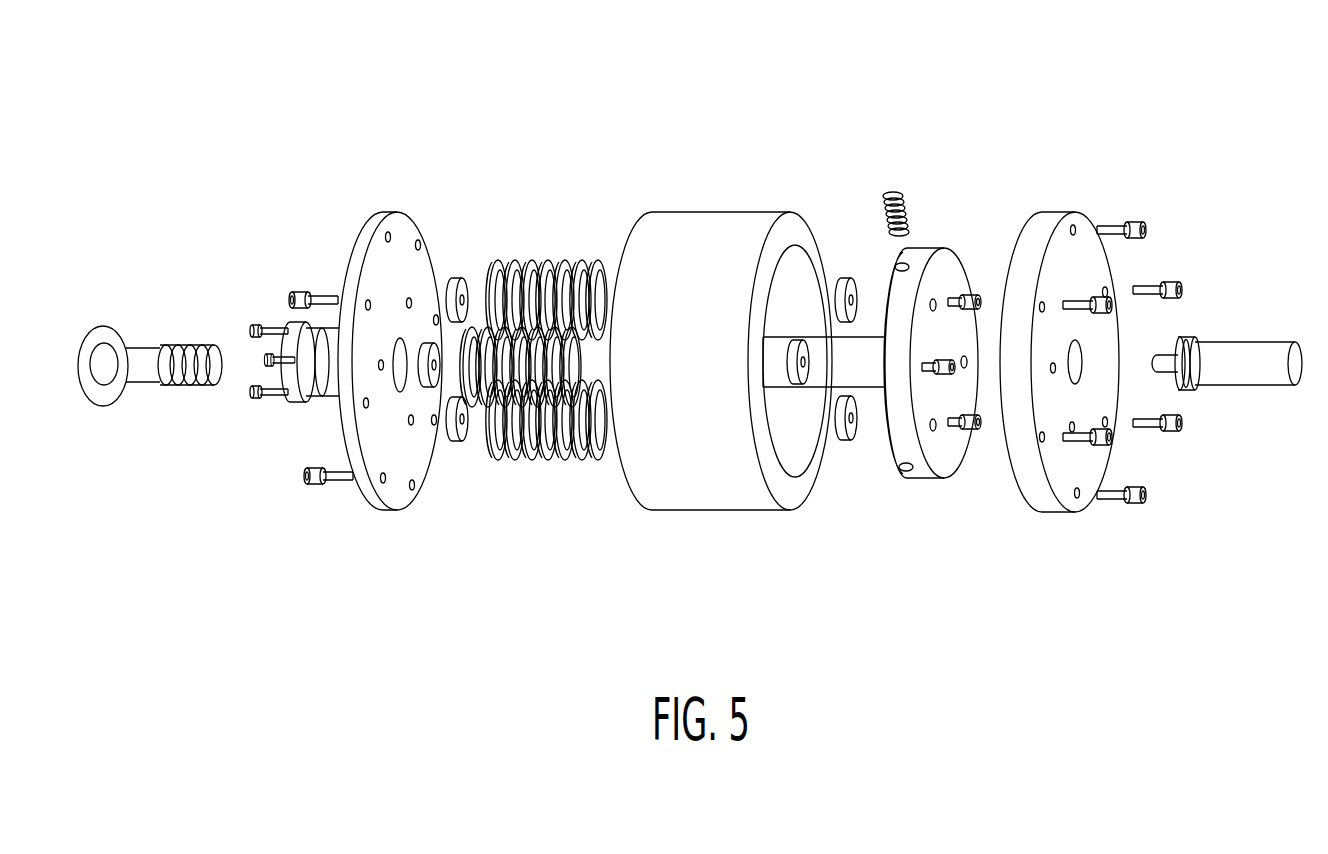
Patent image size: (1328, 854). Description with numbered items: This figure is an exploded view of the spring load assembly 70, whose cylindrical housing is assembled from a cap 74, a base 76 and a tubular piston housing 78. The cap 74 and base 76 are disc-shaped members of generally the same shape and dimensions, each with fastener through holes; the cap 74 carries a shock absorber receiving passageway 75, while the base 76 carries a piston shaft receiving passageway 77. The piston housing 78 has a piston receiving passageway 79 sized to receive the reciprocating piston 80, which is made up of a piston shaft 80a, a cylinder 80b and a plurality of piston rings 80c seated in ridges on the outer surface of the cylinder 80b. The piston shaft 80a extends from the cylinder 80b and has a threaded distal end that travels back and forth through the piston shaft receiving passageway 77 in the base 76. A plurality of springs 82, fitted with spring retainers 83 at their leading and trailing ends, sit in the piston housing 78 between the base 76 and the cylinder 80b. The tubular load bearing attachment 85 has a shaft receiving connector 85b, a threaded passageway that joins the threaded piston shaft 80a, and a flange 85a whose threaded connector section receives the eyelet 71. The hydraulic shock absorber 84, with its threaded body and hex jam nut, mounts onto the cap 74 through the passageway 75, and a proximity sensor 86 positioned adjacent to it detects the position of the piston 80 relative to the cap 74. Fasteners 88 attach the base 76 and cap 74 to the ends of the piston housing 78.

The spring load assembly 70 is at (984, 108).
The eyelet 71 is at (104, 327).
The cap 74 is at (1046, 216).
The shock absorber receiving passageway 75 is at (1098, 337).
The base 76 is at (384, 212).
The piston shaft receiving passageway 77 is at (430, 474).
The piston housing 78 is at (722, 510).
The piston receiving passageway 79 is at (805, 483).
The piston 80 is at (935, 248).
The piston shaft 80a is at (850, 355).
The cylinder 80b is at (907, 470).
The piston rings 80c is at (932, 478).
The springs 82 is at (256, 328).
The spring retainers 83 is at (463, 278).
The shock absorber 84 is at (1258, 343).
The load bearing attachment 85 is at (275, 375).
The flange 85a is at (293, 404).
The shaft receiving connector 85b is at (325, 396).
The proximity sensor 86 is at (1206, 396).
The fasteners 88 is at (607, 265).